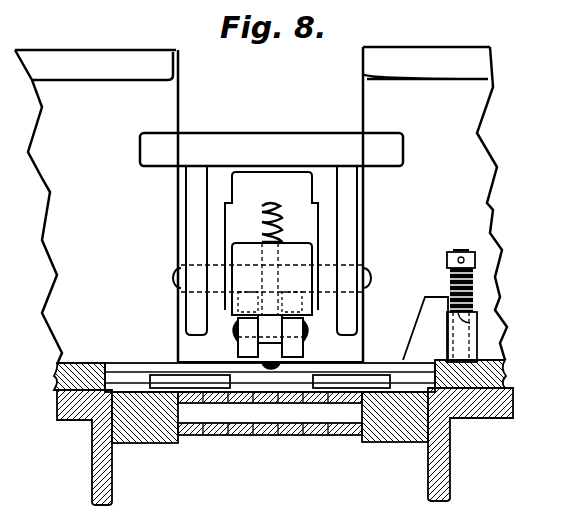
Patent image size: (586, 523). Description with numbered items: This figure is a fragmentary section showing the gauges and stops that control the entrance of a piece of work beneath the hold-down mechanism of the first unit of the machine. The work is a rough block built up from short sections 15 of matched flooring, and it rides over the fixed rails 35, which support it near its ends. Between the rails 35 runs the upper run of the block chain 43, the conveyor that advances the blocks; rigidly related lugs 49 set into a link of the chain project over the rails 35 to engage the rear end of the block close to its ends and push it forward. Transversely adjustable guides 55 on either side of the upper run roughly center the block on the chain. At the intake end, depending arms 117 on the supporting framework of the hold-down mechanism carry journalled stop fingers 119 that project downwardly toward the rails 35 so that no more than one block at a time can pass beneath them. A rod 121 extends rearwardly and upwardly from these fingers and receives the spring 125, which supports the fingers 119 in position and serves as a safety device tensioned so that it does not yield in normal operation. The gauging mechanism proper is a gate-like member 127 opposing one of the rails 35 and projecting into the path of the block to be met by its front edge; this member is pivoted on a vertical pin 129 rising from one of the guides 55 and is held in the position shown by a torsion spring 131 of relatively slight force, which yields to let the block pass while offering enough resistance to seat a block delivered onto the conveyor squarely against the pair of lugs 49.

The short sections of matched flooring 15 is at (120, 366).
The fixed rails 35 is at (155, 437).
The block chain 43 is at (322, 437).
The lugs 49 is at (152, 375).
The transversely adjustable guides 55 is at (60, 370).
The depending arms 117 is at (190, 212).
The stop fingers 119 is at (246, 347).
The rod 121 is at (276, 212).
The spring 125 is at (263, 236).
The gate-like member 127 is at (422, 316).
The vertical pin 129 is at (467, 327).
The torsion spring 131 is at (468, 292).